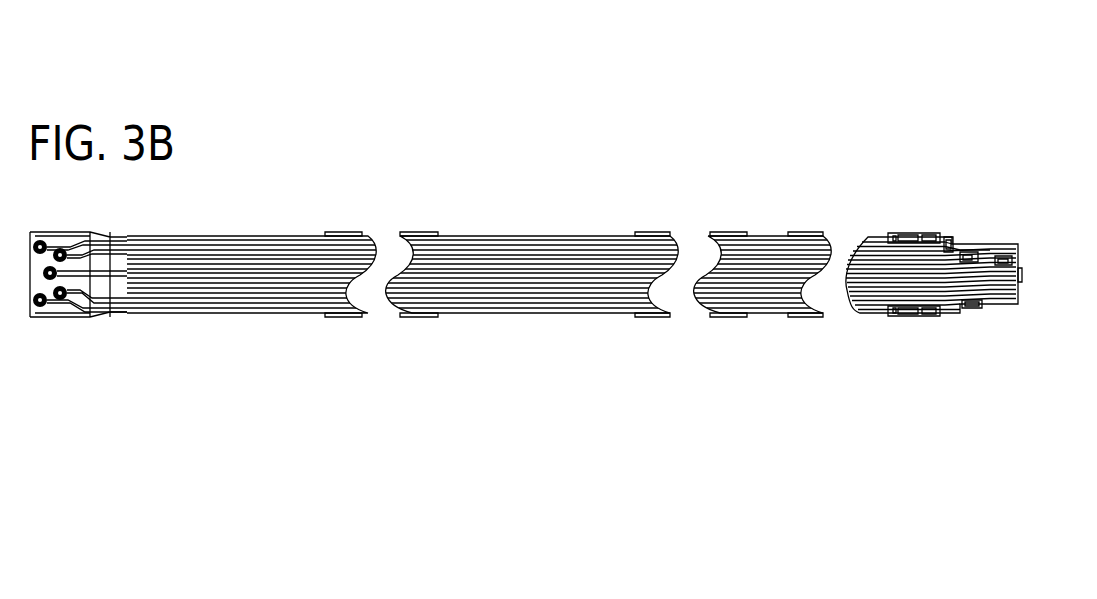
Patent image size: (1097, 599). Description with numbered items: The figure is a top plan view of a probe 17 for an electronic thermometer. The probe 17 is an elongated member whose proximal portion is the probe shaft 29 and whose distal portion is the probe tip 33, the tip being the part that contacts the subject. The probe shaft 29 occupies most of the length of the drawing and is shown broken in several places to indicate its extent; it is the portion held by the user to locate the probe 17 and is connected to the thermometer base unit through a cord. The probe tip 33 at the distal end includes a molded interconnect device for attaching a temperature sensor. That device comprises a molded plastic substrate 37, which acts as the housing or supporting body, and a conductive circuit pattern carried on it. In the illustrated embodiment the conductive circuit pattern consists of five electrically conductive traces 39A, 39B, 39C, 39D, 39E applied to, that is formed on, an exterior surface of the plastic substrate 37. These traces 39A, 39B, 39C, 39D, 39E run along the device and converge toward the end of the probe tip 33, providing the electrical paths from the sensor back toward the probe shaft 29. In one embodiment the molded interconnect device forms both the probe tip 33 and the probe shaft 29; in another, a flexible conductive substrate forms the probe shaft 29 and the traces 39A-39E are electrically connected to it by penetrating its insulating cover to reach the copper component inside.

The probe 17 is at (478, 128).
The probe shaft 29 is at (30, 337).
The probe tip 33 is at (1026, 337).
The molded plastic substrate 37 is at (879, 239).
The electrically conductive trace 39A is at (949, 250).
The electrically conductive trace 39B is at (965, 264).
The electrically conductive trace 39C is at (1005, 262).
The electrically conductive trace 39D is at (1022, 280).
The electrically conductive trace 39E is at (972, 306).